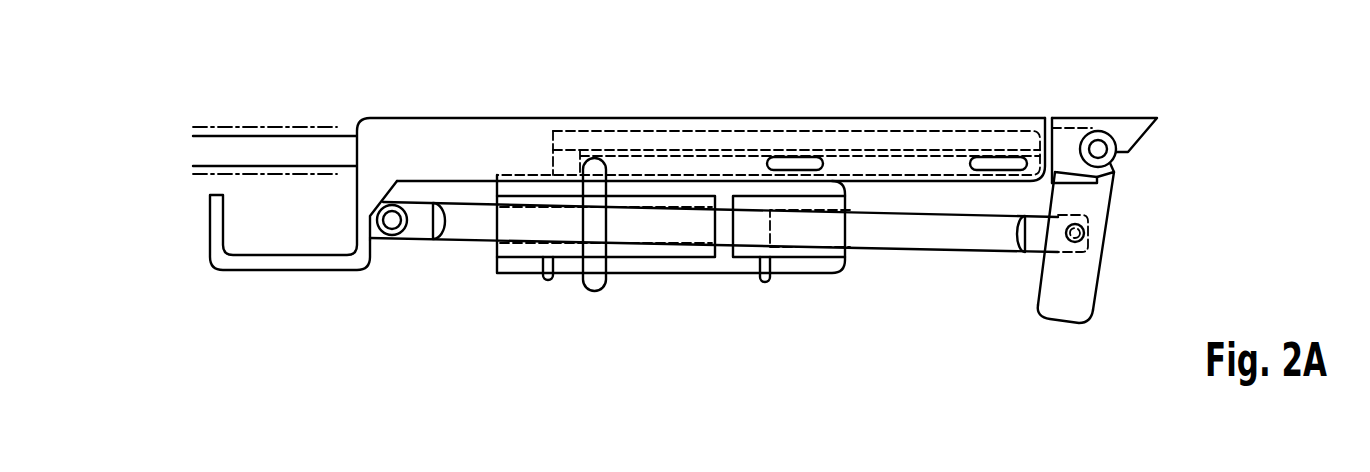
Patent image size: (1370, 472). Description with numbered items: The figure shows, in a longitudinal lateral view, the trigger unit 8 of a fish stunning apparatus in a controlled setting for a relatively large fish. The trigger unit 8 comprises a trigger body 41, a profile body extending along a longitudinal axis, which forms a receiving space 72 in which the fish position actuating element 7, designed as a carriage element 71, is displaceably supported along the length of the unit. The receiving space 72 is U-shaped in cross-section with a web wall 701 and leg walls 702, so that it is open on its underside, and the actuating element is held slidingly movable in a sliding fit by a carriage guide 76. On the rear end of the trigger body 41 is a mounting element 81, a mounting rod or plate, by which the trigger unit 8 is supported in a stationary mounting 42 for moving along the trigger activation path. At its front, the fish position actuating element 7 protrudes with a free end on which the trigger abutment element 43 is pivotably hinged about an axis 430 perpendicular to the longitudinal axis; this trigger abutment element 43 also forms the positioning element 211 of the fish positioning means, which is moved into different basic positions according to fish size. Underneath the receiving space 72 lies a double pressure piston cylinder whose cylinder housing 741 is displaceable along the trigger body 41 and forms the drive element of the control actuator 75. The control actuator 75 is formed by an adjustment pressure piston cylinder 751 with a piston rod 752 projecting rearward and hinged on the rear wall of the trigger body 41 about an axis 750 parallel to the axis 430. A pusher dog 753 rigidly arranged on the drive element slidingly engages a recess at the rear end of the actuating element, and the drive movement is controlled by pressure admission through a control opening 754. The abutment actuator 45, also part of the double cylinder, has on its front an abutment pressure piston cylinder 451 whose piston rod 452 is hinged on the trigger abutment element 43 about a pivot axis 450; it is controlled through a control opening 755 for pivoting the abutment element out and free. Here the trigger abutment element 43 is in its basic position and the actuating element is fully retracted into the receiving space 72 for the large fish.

The mounting element 81 is at (232, 147).
The mounting 42 is at (293, 173).
The trigger body 41 is at (408, 118).
The fish position actuating element 7 is at (663, 105).
The leg walls 702 is at (830, 137).
The web wall 701 is at (905, 117).
The carriage element 71 is at (565, 120).
The trigger unit 8 is at (930, 108).
The carriage guide 76 is at (1003, 157).
The axis 430 is at (1096, 140).
The trigger abutment element 43 is at (1112, 203).
The positioning element 211 is at (1077, 292).
The pivot axis 450 is at (1086, 231).
The receiving space 72 is at (900, 195).
The piston rod 752 is at (477, 241).
The piston rod 452 is at (960, 253).
The abutment pressure piston cylinder 451 is at (913, 280).
The abutment actuator 45 is at (840, 316).
The axis 750 is at (390, 224).
The adjustment pressure piston cylinder 751 is at (457, 277).
The control actuator 75 is at (472, 348).
The cylinder housing 741 is at (667, 274).
The pusher dog 753 is at (594, 158).
The control opening 754 is at (548, 281).
The control opening 755 is at (765, 283).